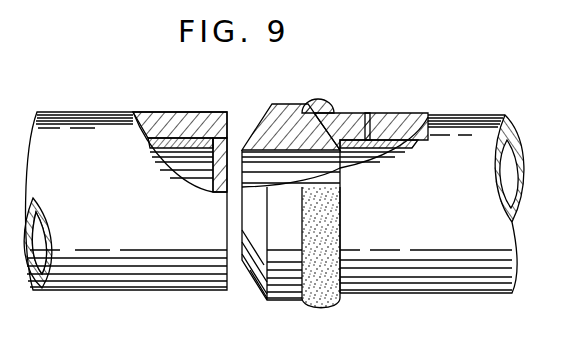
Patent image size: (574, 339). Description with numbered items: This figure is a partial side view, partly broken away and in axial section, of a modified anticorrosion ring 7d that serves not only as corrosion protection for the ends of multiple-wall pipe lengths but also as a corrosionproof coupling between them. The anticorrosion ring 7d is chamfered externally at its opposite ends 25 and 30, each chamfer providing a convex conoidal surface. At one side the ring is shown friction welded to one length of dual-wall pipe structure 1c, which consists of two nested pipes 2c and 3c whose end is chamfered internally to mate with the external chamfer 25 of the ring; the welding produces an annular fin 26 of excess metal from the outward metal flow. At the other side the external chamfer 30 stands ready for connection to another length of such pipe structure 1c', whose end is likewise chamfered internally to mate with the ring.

The length of dual-wall pipe structure 1c' is at (125, 178).
The dual-wall pipe structure 1c is at (432, 181).
The external chamfer 30 is at (336, 199).
The anticorrosion ring 7d is at (284, 120).
The external chamfer 25 is at (353, 125).
The pipe 2c is at (402, 122).
The pipe 3c is at (405, 146).
The annular fin 26 is at (326, 300).